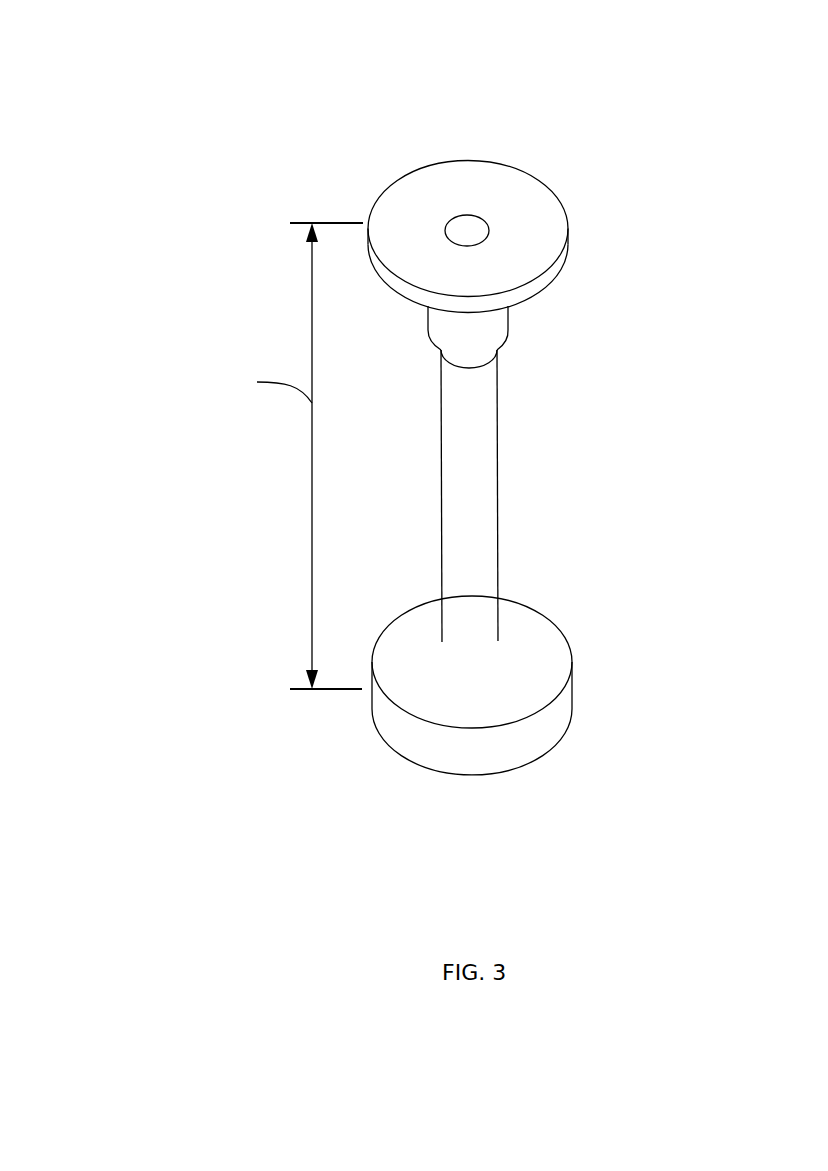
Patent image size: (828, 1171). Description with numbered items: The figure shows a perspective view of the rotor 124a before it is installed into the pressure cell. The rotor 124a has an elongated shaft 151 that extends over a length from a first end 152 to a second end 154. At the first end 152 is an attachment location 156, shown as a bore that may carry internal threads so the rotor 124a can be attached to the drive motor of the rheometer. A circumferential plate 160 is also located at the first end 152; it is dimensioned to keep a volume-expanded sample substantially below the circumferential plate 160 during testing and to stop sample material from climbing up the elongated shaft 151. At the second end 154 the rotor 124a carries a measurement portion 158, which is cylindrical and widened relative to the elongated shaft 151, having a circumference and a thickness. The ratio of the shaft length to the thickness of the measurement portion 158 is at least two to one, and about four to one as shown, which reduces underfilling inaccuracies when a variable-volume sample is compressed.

The rotor 124a is at (146, 106).
The circumferential plate 160 is at (403, 187).
The attachment location 156 is at (477, 228).
The first end 152 is at (514, 309).
The elongated shaft 151 is at (488, 450).
The second end 154 is at (506, 648).
The measurement portion 158 is at (537, 696).